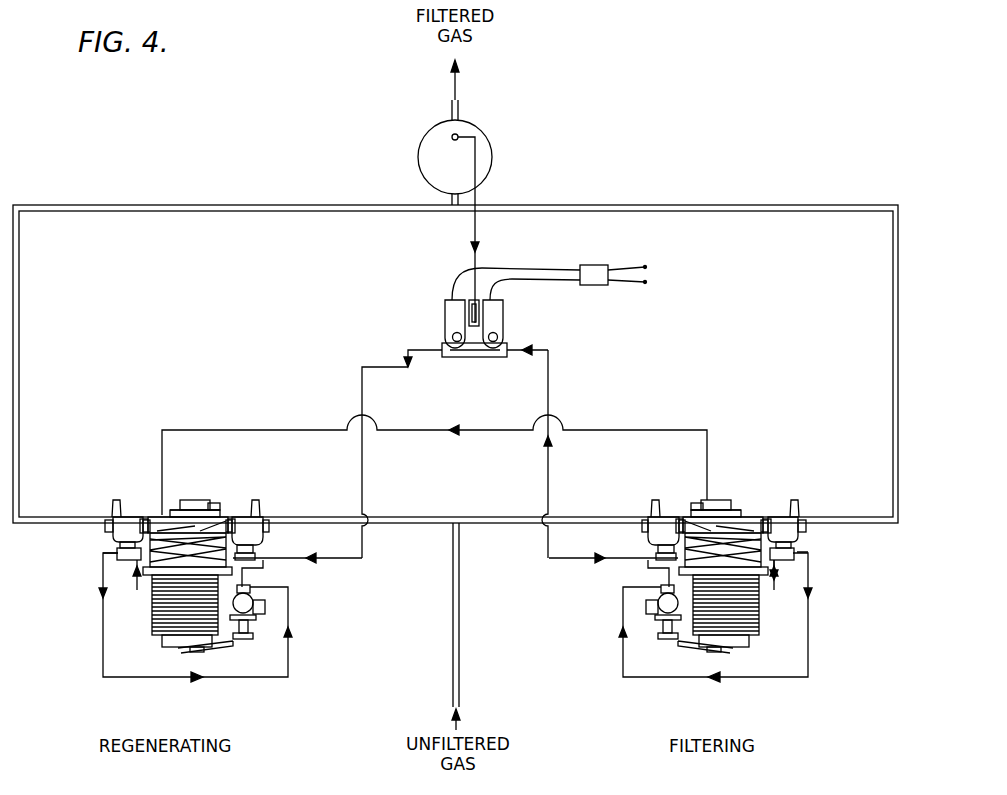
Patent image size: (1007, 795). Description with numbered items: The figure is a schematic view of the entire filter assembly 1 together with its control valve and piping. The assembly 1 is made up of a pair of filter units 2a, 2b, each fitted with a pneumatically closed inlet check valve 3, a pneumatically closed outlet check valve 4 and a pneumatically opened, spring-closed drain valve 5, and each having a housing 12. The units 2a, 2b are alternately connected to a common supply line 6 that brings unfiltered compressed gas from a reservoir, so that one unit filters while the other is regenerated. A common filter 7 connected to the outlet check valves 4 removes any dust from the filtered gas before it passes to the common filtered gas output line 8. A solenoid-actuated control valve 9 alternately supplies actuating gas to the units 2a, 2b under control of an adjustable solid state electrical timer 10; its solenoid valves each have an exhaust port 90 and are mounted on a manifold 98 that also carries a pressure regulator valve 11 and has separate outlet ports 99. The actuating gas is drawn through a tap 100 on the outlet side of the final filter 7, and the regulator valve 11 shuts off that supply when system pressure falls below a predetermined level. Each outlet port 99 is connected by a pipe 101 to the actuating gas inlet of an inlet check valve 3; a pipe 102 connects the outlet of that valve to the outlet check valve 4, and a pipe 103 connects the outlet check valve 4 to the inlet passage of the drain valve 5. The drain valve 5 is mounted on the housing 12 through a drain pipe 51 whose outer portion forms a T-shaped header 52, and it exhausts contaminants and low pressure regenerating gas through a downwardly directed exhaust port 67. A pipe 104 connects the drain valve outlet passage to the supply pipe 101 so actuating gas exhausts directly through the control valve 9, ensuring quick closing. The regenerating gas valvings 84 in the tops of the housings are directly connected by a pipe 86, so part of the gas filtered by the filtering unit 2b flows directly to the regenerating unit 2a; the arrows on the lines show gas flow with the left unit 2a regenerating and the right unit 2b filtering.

The filter assembly 1 is at (240, 207).
The filter unit 2a is at (150, 605).
The filter unit 2b is at (760, 604).
The inlet check valve 3 is at (245, 500).
The outlet check valve 4 is at (135, 500).
The drain valve 5 is at (255, 600).
The supply line 6 is at (460, 648).
The common filter 7 is at (492, 162).
The filtered gas output line 8 is at (460, 108).
The control valve 9 is at (506, 315).
The electrical timer 10 is at (604, 265).
The pressure regulator valve 11 is at (479, 300).
The housing 12 is at (152, 630).
The drain pipe 51 is at (215, 645).
The T-shaped header 52 is at (258, 641).
The exhaust port 67 is at (263, 616).
The regenerating gas valving 84 is at (177, 505).
The pipe 86 is at (423, 432).
The exhaust port 90 is at (453, 334).
The manifold 98 is at (475, 357).
The outlet ports 99 is at (440, 346).
The tap 100 is at (459, 135).
The pipes 101 is at (362, 400).
The pipes 102 is at (145, 584).
The pipes 103 is at (103, 575).
The pipe 104 is at (265, 566).